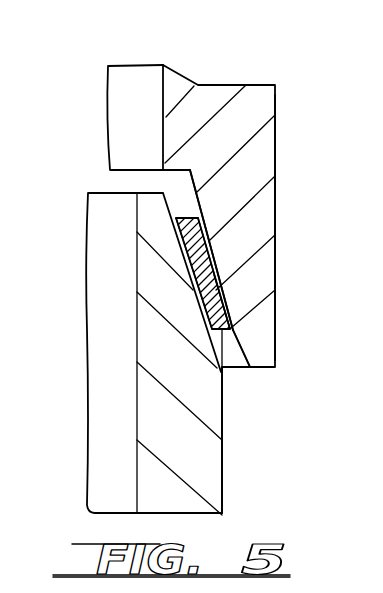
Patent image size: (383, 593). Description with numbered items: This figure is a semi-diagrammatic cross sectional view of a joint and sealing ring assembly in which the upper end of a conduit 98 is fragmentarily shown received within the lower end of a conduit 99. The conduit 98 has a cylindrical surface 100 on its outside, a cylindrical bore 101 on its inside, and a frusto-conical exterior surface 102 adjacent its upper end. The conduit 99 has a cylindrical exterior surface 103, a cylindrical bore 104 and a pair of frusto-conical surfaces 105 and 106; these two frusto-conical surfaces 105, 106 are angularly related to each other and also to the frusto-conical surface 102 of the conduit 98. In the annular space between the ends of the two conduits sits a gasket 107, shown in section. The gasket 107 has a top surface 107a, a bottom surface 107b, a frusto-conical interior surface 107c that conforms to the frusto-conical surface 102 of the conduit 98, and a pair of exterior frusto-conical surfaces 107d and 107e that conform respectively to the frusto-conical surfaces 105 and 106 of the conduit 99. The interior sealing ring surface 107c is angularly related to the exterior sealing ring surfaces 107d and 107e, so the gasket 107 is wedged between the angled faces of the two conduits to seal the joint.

The conduit 98 is at (223, 513).
The conduit 99 is at (212, 98).
The cylindrical surface 100 is at (222, 468).
The cylindrical bore 101 is at (137, 450).
The frusto-conical exterior surface 102 is at (200, 320).
The cylindrical exterior surface 103 is at (272, 116).
The cylindrical bore 104 is at (163, 92).
The frusto-conical surface 105 is at (200, 203).
The frusto-conical surface 106 is at (237, 337).
The gasket 107 is at (209, 257).
The top surface 107a is at (190, 213).
The bottom surface 107b is at (222, 372).
The frusto-conical interior surface 107c is at (190, 252).
The frusto-conical surface 107d is at (206, 232).
The frusto-conical surface 107e is at (223, 302).